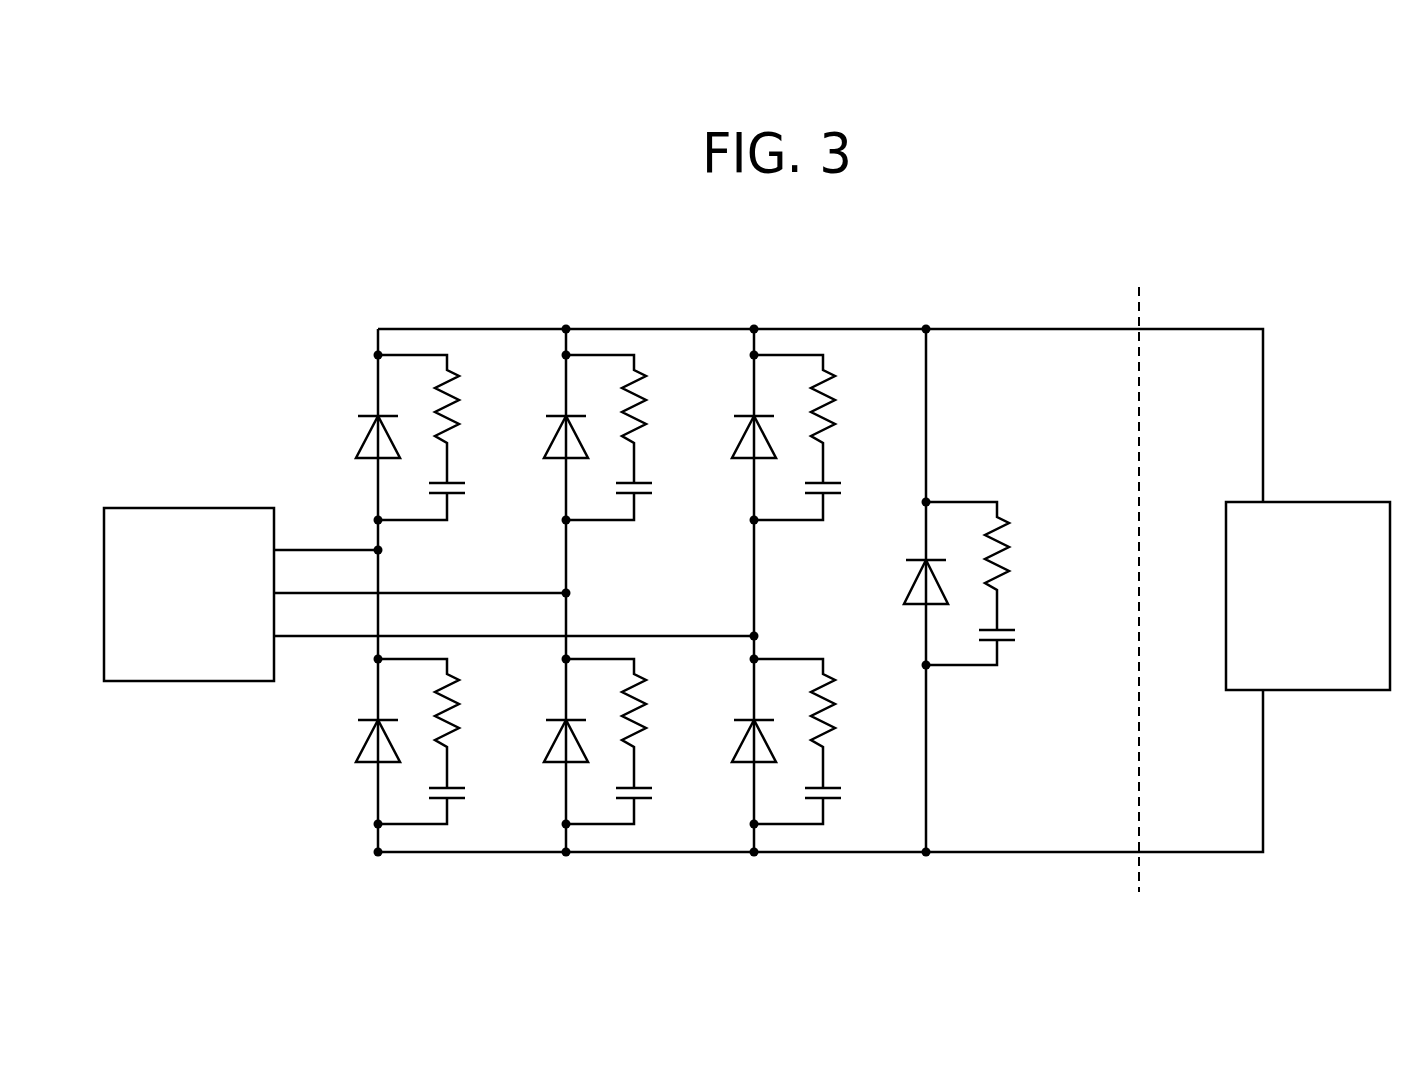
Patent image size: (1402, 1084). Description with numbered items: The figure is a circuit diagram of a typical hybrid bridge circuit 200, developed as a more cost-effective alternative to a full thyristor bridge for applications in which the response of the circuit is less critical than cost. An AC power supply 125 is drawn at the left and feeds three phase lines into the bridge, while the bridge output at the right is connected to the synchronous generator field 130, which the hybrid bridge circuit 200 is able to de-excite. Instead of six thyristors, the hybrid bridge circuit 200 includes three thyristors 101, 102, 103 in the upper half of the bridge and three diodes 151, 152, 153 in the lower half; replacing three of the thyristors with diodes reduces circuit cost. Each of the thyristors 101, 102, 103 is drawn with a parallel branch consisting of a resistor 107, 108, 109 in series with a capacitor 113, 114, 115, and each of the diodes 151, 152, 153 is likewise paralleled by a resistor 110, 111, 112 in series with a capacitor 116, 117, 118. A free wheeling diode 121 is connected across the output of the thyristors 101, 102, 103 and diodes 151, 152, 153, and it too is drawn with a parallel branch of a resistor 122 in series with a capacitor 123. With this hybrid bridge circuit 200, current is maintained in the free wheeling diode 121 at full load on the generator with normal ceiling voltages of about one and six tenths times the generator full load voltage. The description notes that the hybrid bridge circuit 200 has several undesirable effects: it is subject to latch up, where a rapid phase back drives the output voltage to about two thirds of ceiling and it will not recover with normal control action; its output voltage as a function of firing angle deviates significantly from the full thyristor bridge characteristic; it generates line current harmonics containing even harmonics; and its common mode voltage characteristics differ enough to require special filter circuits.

The hybrid bridge circuit 200 is at (653, 280).
The AC power supply 125 is at (152, 508).
The generator field 130 is at (1304, 502).
The thyristor 101 is at (353, 437).
The thyristor 102 is at (541, 437).
The thyristor 103 is at (729, 437).
The diode 151 is at (353, 741).
The diode 152 is at (541, 741).
The diode 153 is at (729, 741).
The resistor 107 is at (442, 417).
The resistor 108 is at (630, 417).
The resistor 109 is at (818, 417).
The resistor 110 is at (442, 721).
The resistor 111 is at (630, 721).
The resistor 112 is at (818, 721).
The capacitor 113 is at (442, 496).
The capacitor 114 is at (630, 496).
The capacitor 115 is at (818, 496).
The capacitor 116 is at (442, 803).
The capacitor 117 is at (630, 803).
The capacitor 118 is at (818, 803).
The free wheeling diode 121 is at (903, 582).
The resistor 122 is at (991, 564).
The capacitor 123 is at (991, 644).